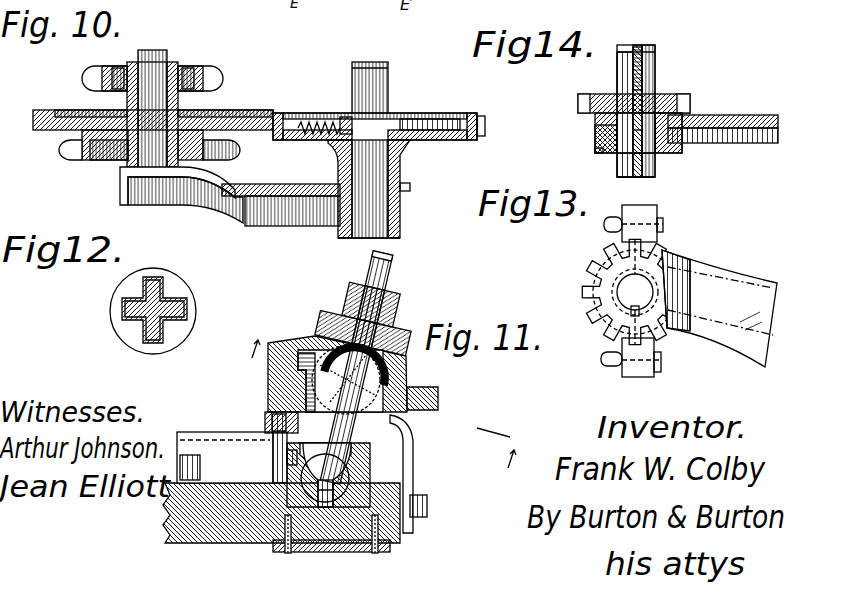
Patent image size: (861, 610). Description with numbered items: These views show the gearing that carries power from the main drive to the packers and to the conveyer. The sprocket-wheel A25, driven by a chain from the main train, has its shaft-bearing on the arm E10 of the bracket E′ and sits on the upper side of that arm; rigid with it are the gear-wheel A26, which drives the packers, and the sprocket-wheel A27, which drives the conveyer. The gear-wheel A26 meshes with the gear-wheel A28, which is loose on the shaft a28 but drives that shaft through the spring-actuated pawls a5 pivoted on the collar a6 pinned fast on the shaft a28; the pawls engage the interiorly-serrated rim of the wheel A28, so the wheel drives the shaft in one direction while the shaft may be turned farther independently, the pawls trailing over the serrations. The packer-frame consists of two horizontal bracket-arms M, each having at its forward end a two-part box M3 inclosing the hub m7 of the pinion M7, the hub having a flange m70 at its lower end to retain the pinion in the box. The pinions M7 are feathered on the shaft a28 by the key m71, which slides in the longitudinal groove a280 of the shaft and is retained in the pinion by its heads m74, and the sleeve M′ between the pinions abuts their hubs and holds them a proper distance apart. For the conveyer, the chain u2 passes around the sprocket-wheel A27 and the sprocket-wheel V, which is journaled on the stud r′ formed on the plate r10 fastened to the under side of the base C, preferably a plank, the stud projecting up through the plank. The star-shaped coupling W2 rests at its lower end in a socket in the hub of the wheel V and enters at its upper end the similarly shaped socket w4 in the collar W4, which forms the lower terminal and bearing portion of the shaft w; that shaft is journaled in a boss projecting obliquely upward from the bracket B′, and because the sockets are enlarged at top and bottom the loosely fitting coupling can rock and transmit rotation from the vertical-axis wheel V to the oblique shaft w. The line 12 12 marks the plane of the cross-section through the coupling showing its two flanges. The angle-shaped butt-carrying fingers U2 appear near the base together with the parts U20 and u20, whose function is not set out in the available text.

In FIG. 10, the gear-wheel A26 is at (58, 103).
In FIG. 10, the sprocket-wheel A27 is at (222, 90).
In FIG. 10, the sprocket-wheel A25 is at (80, 153).
In FIG. 10, the bracket arm E10 is at (163, 189).
In FIG. 10, the bracket E′ is at (255, 223).
In FIG. 10, the shaft a28 is at (368, 172).
In FIG. 14, the shaft a28 is at (632, 70).
In FIG. 13, the shaft a28 is at (625, 293).
In FIG. 10, the spring-actuated pawls a5 is at (308, 112).
In FIG. 10, the collar a6 is at (355, 128).
In FIG. 10, the gear-wheel A28 is at (455, 142).
In FIG. 14, the longitudinal groove a280 is at (652, 50).
In FIG. 14, the key heads m74 is at (642, 87).
In FIG. 13, the key heads m74 is at (632, 315).
In FIG. 14, the pinion M7 is at (667, 95).
In FIG. 13, the pinion M7 is at (598, 292).
In FIG. 14, the bracket-arm M is at (723, 117).
In FIG. 13, the bracket-arm M is at (719, 308).
In FIG. 14, the pinion hub m7 is at (595, 132).
In FIG. 14, the hub flange m70 is at (602, 148).
In FIG. 14, the key m71 is at (642, 137).
In FIG. 14, the two-part box M3 is at (652, 175).
In FIG. 13, the two-part box M3 is at (630, 228).
In FIG. 14, the sleeve M′ is at (677, 150).
In FIG. 13, the sleeve M′ is at (672, 330).
In FIG. 12, the star-shaped coupling W2 is at (120, 322).
In FIG. 11, the star-shaped coupling W2 is at (400, 433).
In FIG. 12, the collar or hub W4 is at (173, 337).
In FIG. 11, the collar or hub W4 is at (372, 350).
In FIG. 11, the shaft w is at (395, 264).
In FIG. 11, the star-shaped socket w4 is at (360, 372).
In FIG. 11, the bracket B′ is at (435, 395).
In FIG. 11, the sprocket-wheel V is at (375, 460).
In FIG. 11, the butt-carrying fingers U2 is at (207, 443).
In FIG. 11, the box wall U20 is at (283, 433).
In FIG. 11, the block u20 is at (265, 421).
In FIG. 11, the chain u2 is at (272, 483).
In FIG. 11, the base C is at (220, 520).
In FIG. 11, the stud r′ is at (323, 552).
In FIG. 11, the plate r10 is at (375, 553).
In FIG. 11, the section line 12 is at (385, 406).